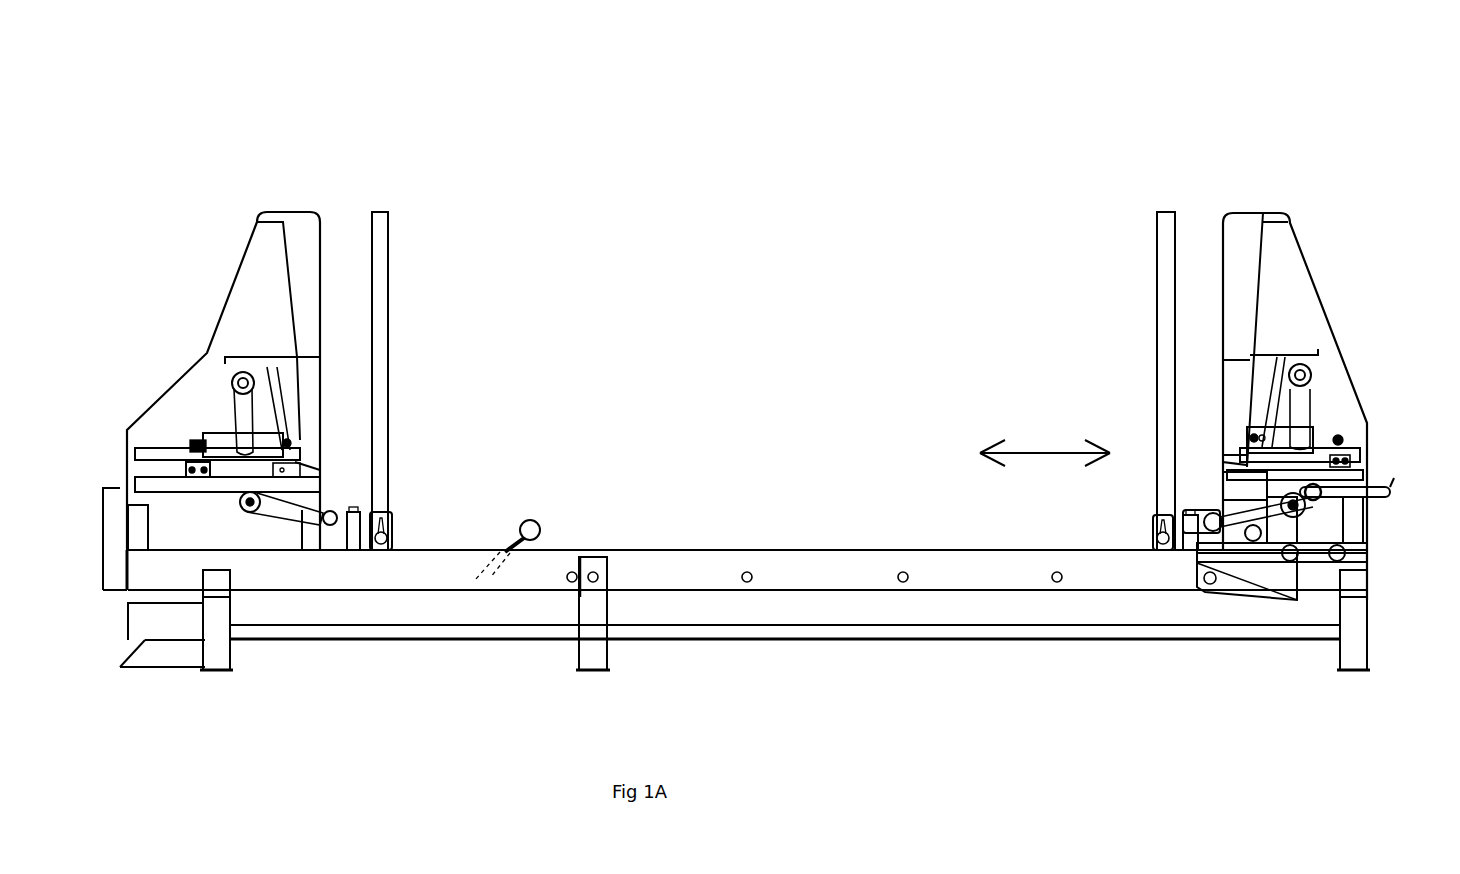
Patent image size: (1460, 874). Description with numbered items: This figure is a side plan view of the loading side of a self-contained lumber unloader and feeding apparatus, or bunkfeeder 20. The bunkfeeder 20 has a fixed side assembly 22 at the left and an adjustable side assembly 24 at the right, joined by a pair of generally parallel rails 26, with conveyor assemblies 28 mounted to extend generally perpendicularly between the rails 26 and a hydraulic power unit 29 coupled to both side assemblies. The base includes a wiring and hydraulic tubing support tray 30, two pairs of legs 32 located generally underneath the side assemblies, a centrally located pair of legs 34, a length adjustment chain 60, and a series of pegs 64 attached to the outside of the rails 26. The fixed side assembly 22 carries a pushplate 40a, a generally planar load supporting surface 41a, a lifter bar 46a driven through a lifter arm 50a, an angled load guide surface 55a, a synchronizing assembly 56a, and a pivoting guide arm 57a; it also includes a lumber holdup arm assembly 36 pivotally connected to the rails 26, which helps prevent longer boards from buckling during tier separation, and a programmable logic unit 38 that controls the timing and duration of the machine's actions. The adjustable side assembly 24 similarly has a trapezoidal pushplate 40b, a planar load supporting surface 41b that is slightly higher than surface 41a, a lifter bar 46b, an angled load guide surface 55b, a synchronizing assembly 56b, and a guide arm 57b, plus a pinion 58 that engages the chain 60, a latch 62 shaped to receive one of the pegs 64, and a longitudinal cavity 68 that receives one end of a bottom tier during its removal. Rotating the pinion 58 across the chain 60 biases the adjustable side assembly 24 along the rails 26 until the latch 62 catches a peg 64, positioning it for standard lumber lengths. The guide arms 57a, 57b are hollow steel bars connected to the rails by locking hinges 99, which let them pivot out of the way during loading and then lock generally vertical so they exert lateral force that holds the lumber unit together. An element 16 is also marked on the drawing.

The bunkfeeder 20 is at (1113, 122).
The fixed side assembly 22 is at (300, 210).
The adjustable side assembly 24 is at (1257, 207).
The rails 26 is at (690, 548).
The conveyor assemblies 28 is at (400, 515).
The hydraulic power unit 29 is at (177, 615).
The wiring and hydraulic tubing support tray 30 is at (452, 631).
The legs 32 is at (220, 655).
The centrally located pair of legs 34 is at (600, 656).
The lumber holdup arm assembly 36 is at (512, 527).
The programmable logic unit 38 is at (103, 487).
The pushplate 40a is at (305, 462).
The planar load supporting surface 41a is at (300, 477).
The lifter bar 46a is at (337, 518).
The trapezoidal pushplate 40b is at (1228, 455).
The planar load supporting surface 41b is at (1223, 468).
The lifter bar 46b is at (1215, 518).
The lifter arm 50a is at (283, 520).
The angled load guide surface 55a is at (293, 287).
The angled load guide surface 55b is at (1252, 300).
The synchronizing assembly 56a is at (243, 412).
The synchronizing assembly 56b is at (1303, 400).
The pivoting guide arm 57a is at (380, 300).
The guide arm 57b is at (1165, 262).
The pinion 58 is at (1350, 558).
The length adjustment chain 60 is at (865, 548).
The latch 62 is at (1250, 563).
The pegs 64 is at (748, 583).
The longitudinal cavity 68 is at (1240, 485).
The locking hinges 99 is at (395, 530).
The actuator rod 16 is at (1354, 485).